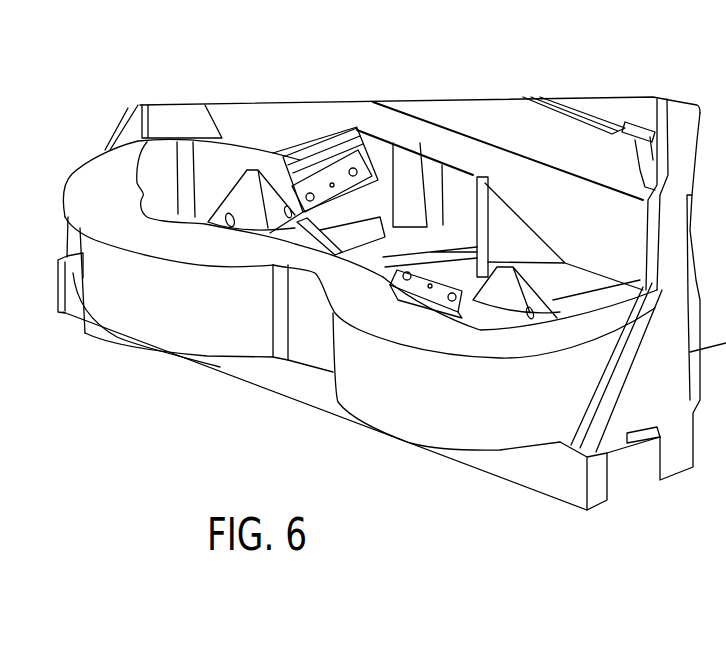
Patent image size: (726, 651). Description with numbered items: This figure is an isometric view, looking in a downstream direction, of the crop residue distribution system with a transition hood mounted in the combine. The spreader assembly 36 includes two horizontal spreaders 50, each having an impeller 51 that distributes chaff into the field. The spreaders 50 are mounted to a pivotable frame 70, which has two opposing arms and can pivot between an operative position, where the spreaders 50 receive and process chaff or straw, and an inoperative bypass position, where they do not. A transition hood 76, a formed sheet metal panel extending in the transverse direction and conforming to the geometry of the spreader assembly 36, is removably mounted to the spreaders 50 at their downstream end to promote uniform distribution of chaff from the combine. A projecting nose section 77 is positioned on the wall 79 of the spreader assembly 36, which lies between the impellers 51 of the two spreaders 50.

The spreader assembly 36 is at (233, 318).
The horizontal spreader 50 is at (150, 330).
The impeller 51 is at (292, 188).
The pivotable frame 70 is at (126, 105).
The transition hood 76 is at (510, 233).
The projecting nose section 77 is at (430, 234).
The wall 79 is at (392, 238).